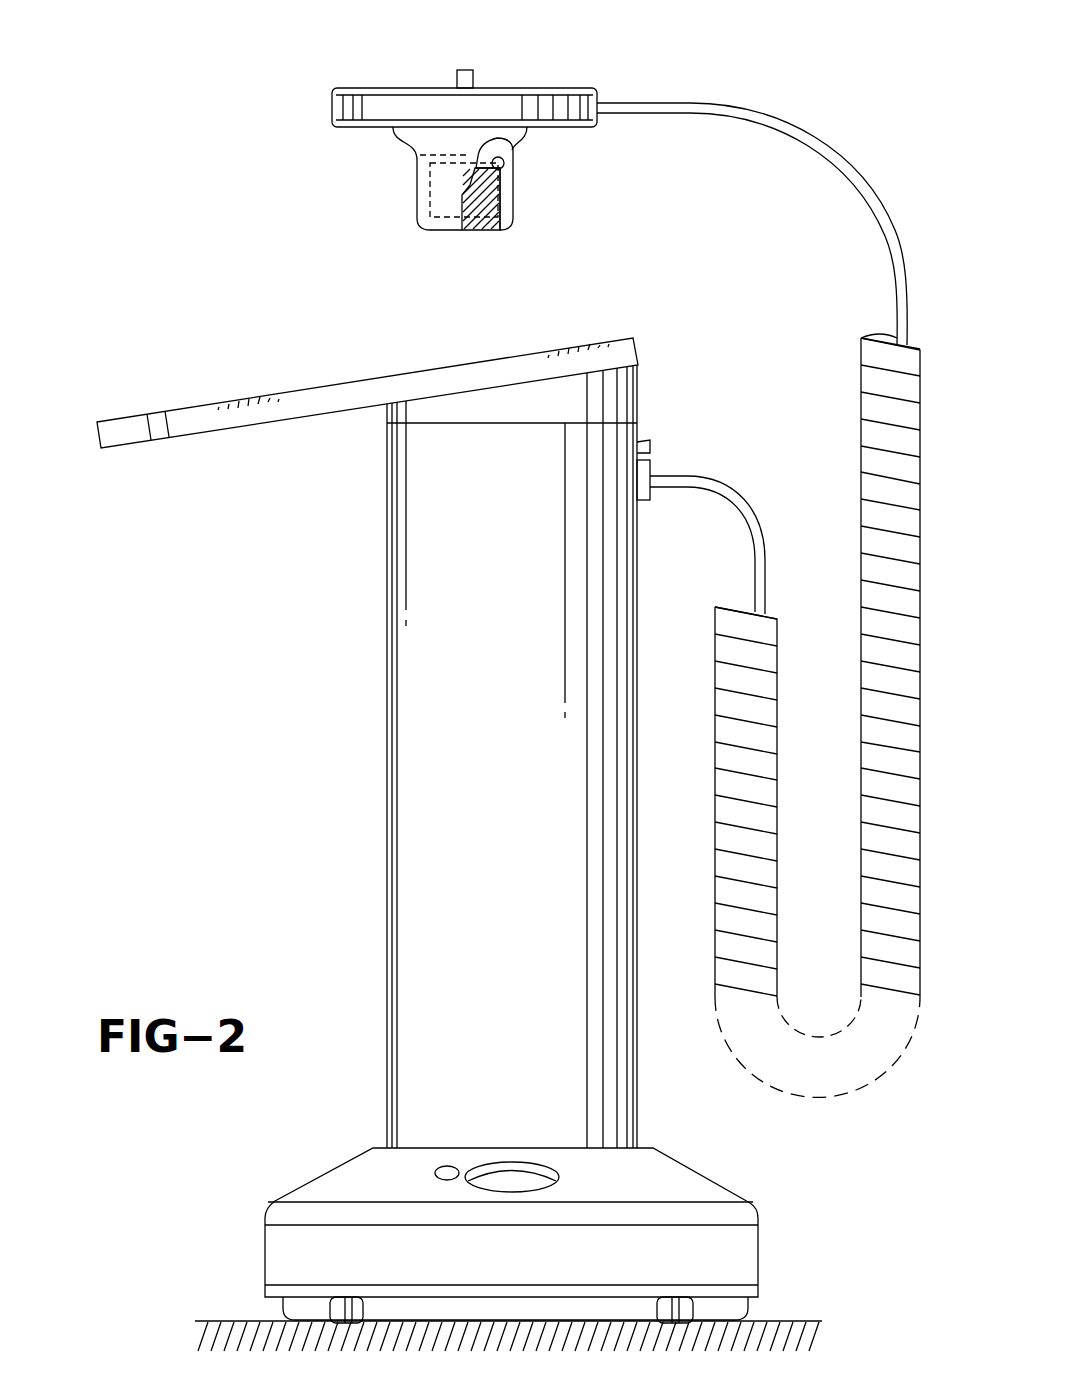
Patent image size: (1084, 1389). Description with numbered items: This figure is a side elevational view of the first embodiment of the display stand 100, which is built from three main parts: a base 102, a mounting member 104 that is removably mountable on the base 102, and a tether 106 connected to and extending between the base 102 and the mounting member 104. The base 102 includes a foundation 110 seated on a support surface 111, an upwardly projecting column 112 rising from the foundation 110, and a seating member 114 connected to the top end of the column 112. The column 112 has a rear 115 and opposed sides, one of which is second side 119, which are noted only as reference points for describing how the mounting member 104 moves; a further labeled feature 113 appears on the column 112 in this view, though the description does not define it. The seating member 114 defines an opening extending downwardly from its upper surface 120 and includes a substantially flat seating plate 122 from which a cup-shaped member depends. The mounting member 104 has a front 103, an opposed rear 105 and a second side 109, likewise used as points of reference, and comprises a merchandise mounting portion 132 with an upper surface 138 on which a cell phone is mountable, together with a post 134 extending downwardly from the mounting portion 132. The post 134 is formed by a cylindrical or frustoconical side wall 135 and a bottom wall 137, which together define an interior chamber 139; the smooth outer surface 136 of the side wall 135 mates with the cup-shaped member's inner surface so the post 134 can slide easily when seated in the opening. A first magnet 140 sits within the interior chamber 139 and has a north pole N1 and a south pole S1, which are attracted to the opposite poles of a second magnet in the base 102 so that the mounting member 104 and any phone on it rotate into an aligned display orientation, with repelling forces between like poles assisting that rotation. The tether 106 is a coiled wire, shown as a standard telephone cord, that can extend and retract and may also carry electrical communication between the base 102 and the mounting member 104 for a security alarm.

The display stand 100 is at (250, 293).
The base 102 is at (425, 756).
The front 103 is at (330, 110).
The mounting member 104 is at (432, 151).
The rear 105 is at (603, 97).
The tether 106 is at (807, 122).
The second side 109 is at (472, 108).
The foundation 110 is at (298, 1186).
The support surface 111 is at (227, 1320).
The column 112 is at (384, 769).
The side edge 113 is at (386, 697).
The seating member 114 is at (647, 344).
The rear 115 is at (637, 556).
The second side 119 is at (512, 580).
The upper surface 120 is at (585, 340).
The seating plate 122 is at (298, 386).
The merchandise mounting portion 132 is at (326, 97).
The post 134 is at (406, 162).
The side wall 135 is at (516, 209).
The outer surface 136 is at (415, 191).
The bottom wall 137 is at (445, 237).
The upper surface 138 is at (400, 88).
The interior chamber 139 is at (505, 163).
The first magnet 140 is at (489, 222).
The north pole N1 is at (428, 211).
The south pole S1 is at (512, 185).